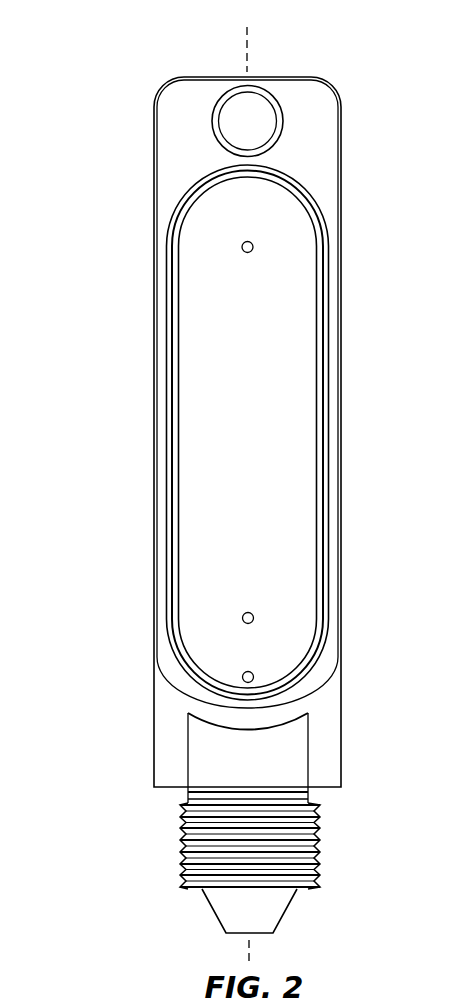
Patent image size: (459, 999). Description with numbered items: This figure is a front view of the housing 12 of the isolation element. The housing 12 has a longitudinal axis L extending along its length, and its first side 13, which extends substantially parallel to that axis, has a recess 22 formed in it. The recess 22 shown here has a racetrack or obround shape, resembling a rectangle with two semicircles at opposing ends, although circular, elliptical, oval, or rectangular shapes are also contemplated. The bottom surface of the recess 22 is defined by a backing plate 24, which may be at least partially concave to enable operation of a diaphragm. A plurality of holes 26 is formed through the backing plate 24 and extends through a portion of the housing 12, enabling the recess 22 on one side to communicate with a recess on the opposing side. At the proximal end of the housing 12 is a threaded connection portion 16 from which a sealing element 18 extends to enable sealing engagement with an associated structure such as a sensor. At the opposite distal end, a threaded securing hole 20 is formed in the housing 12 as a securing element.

The housing 12 is at (88, 374).
The first side 13 is at (320, 163).
The threaded connection portion 16 is at (319, 843).
The sealing element 18 is at (292, 904).
The threaded securing hole 20 is at (265, 107).
The recess 22 is at (287, 469).
The backing plate 24 is at (266, 333).
The holes 26 is at (244, 254).